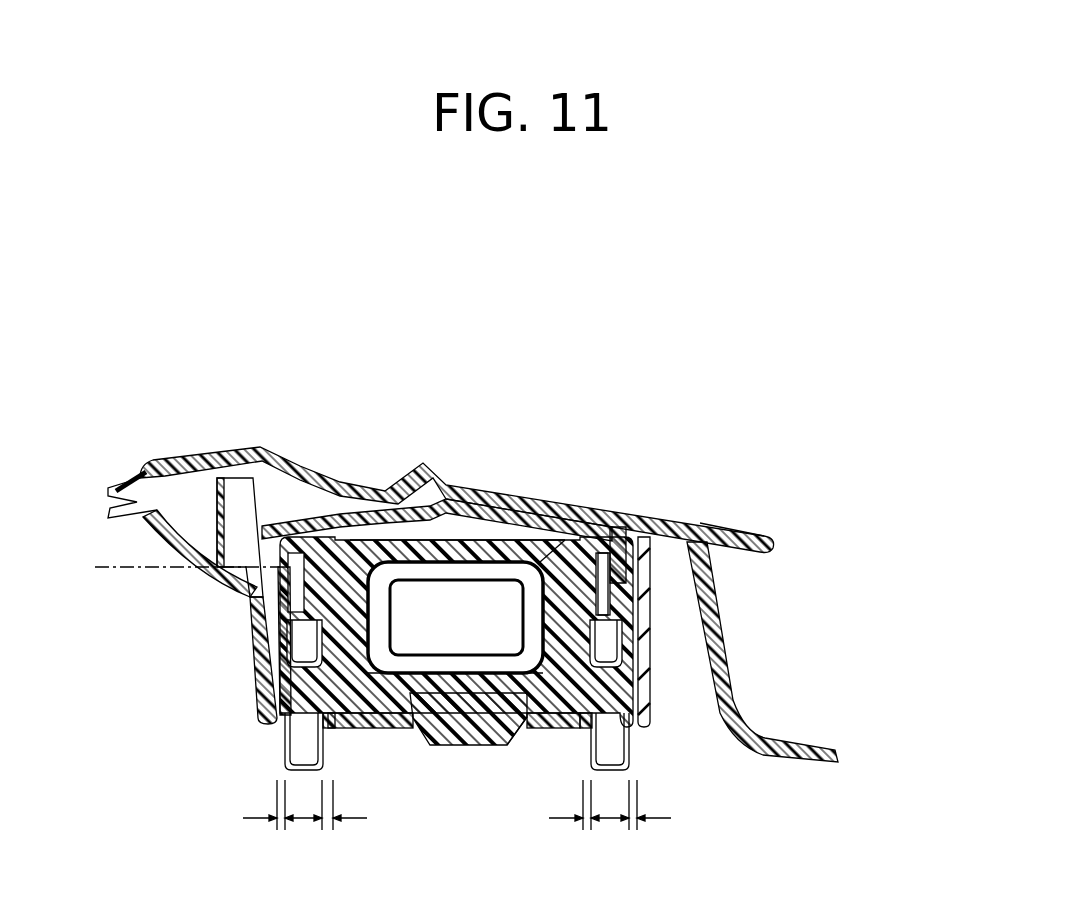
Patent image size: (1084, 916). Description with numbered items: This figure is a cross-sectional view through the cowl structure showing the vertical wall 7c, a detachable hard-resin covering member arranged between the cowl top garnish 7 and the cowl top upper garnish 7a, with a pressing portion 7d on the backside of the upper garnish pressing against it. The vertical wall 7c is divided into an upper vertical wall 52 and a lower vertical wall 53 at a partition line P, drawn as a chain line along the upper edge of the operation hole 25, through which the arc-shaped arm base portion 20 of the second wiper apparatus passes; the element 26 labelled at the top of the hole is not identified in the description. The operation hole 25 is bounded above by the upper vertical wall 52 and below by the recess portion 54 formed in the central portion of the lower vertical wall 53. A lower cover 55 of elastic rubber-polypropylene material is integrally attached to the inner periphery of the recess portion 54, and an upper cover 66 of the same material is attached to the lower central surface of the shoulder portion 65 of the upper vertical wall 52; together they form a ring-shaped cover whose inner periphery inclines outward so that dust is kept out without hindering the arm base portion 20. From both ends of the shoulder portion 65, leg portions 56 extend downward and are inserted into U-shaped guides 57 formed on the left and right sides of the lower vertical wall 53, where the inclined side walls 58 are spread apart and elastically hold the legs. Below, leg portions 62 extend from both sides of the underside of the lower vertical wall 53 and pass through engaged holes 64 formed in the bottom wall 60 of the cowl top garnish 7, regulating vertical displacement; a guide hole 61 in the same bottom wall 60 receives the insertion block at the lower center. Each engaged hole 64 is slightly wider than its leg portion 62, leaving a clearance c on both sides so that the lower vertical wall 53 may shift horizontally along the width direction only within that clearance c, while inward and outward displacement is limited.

The cowl top garnish 7 is at (788, 742).
The cowl top upper garnish 7a is at (478, 478).
The vertical wall 7c is at (630, 523).
The pressing portion 7d is at (603, 551).
The arc-shaped arm base portion 20 is at (383, 597).
The operation hole 25 is at (492, 575).
The tube wall 26 is at (423, 567).
The upper vertical wall 52 is at (614, 538).
The lower vertical wall 53 is at (607, 690).
The recess portion 54 is at (442, 680).
The lower cover 55 is at (390, 682).
The leg portions 56 is at (300, 643).
The guide 57 is at (300, 614).
The side wall 58 is at (605, 608).
The bottom wall 60 is at (405, 722).
The guide hole 61 is at (512, 722).
The leg portions 62 is at (287, 753).
The engaged hole 64 is at (330, 727).
The shoulder portion 65 is at (387, 530).
The upper cover 66 is at (520, 550).
The partition line P is at (178, 567).
The clearance c is at (457, 805).